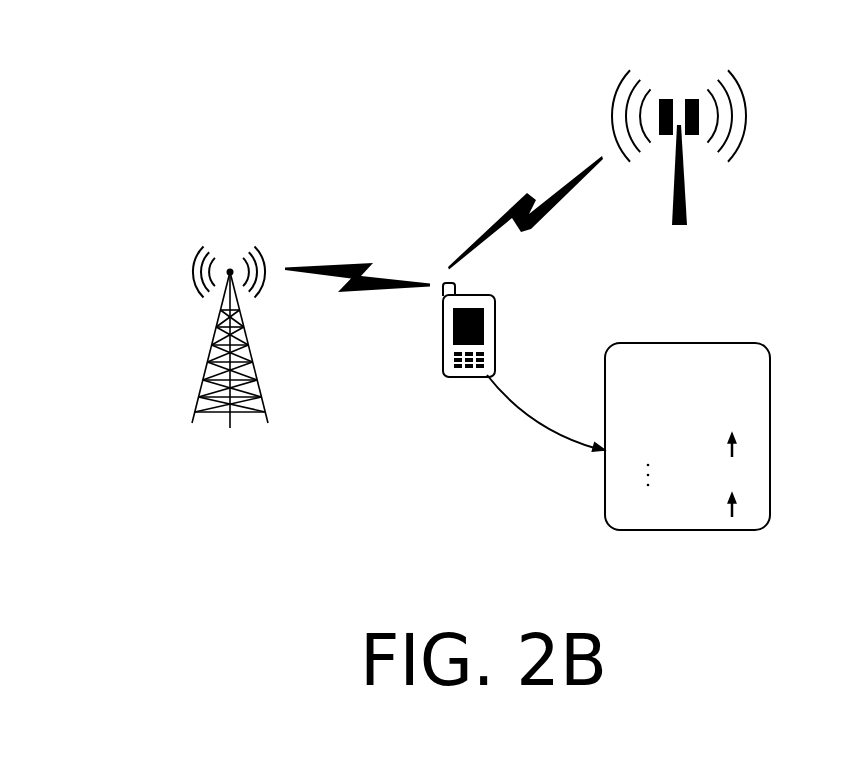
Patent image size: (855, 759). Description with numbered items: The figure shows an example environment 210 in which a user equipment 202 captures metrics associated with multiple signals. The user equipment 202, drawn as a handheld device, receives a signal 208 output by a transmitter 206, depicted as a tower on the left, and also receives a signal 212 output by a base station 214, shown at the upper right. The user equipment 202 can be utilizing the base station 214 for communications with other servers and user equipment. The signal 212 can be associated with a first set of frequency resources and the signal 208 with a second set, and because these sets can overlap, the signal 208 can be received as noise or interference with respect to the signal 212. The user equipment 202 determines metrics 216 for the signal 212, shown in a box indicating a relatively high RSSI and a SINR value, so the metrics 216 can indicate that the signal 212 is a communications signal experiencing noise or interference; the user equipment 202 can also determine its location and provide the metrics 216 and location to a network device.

The environment 210 is at (108, 106).
The user equipment 202 is at (461, 389).
The transmitter 206 is at (232, 369).
The signal 208 is at (339, 313).
The signal 212 is at (505, 178).
The base station 214 is at (675, 178).
The metrics 216 is at (708, 408).